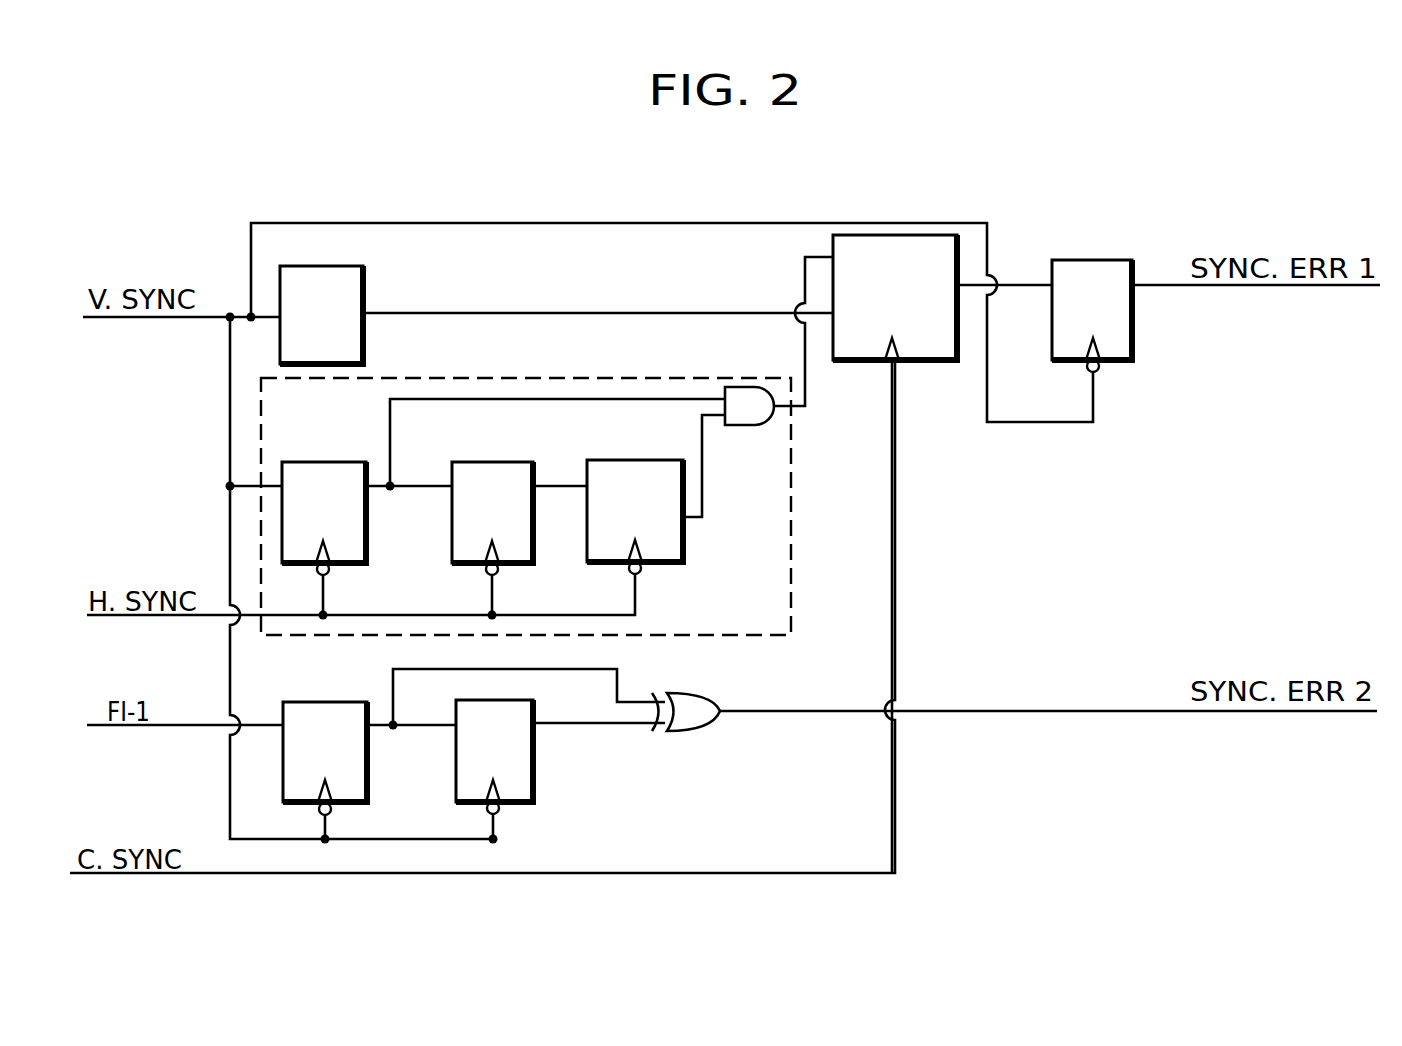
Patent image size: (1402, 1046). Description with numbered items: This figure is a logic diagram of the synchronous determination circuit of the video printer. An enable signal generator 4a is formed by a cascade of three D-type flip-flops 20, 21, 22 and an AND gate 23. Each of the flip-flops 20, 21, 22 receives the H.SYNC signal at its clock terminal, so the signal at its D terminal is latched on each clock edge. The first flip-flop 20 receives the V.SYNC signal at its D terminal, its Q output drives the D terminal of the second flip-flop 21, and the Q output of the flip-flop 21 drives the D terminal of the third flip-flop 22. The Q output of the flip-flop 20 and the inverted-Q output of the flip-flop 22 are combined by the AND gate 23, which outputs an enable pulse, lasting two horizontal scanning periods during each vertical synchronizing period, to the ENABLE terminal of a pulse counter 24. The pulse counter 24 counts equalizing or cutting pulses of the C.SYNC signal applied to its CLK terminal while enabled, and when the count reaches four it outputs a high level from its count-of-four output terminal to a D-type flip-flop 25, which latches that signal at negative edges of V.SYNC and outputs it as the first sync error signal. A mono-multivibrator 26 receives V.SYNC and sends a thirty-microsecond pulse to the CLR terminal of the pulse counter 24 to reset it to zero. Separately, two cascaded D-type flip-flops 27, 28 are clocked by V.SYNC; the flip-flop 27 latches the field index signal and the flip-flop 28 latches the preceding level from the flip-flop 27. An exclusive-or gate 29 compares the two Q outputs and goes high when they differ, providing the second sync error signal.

The enable signal generator 4a is at (558, 378).
The first D-type flip-flop 20 is at (322, 462).
The second D-type flip-flop 21 is at (500, 462).
The third D-type flip-flop 22 is at (639, 460).
The AND gate 23 is at (745, 425).
The pulse counter 24 is at (935, 360).
The D-type flip-flop 25 is at (1093, 260).
The mono-multivibrator 26 is at (363, 290).
The D-type flip-flop 27 is at (322, 702).
The D-type flip-flop 28 is at (533, 757).
The exclusive-or gate 29 is at (693, 731).